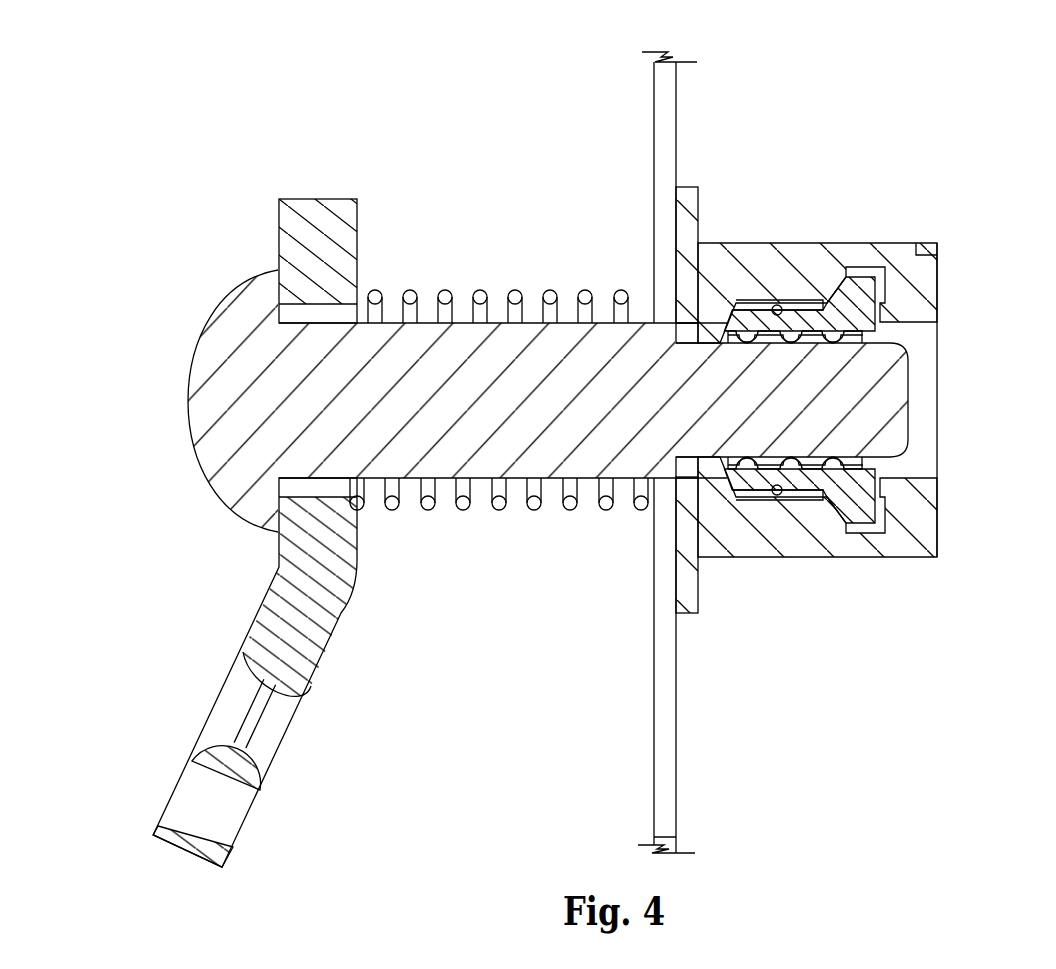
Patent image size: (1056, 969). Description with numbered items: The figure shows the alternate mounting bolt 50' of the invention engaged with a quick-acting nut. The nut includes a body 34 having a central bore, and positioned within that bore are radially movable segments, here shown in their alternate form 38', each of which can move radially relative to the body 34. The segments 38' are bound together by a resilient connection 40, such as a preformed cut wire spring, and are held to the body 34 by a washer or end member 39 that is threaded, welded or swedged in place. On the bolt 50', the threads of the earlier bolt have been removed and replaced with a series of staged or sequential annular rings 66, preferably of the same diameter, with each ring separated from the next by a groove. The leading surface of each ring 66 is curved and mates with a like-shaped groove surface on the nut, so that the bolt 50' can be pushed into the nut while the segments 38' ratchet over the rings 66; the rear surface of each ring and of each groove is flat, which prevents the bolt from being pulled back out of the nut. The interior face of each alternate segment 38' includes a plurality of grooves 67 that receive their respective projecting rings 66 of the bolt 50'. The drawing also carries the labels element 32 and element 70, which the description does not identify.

The mounting plate 32 is at (678, 97).
The body 34 is at (889, 255).
The alternate spring-loaded nut segment 38' is at (839, 315).
The washer or end member 39 is at (924, 291).
The resilient connection 40 is at (779, 302).
The alternate mounting bolt 50' is at (487, 533).
The staged annular rings 66 is at (839, 348).
The grooves 67 is at (797, 490).
The spring 70 is at (406, 300).